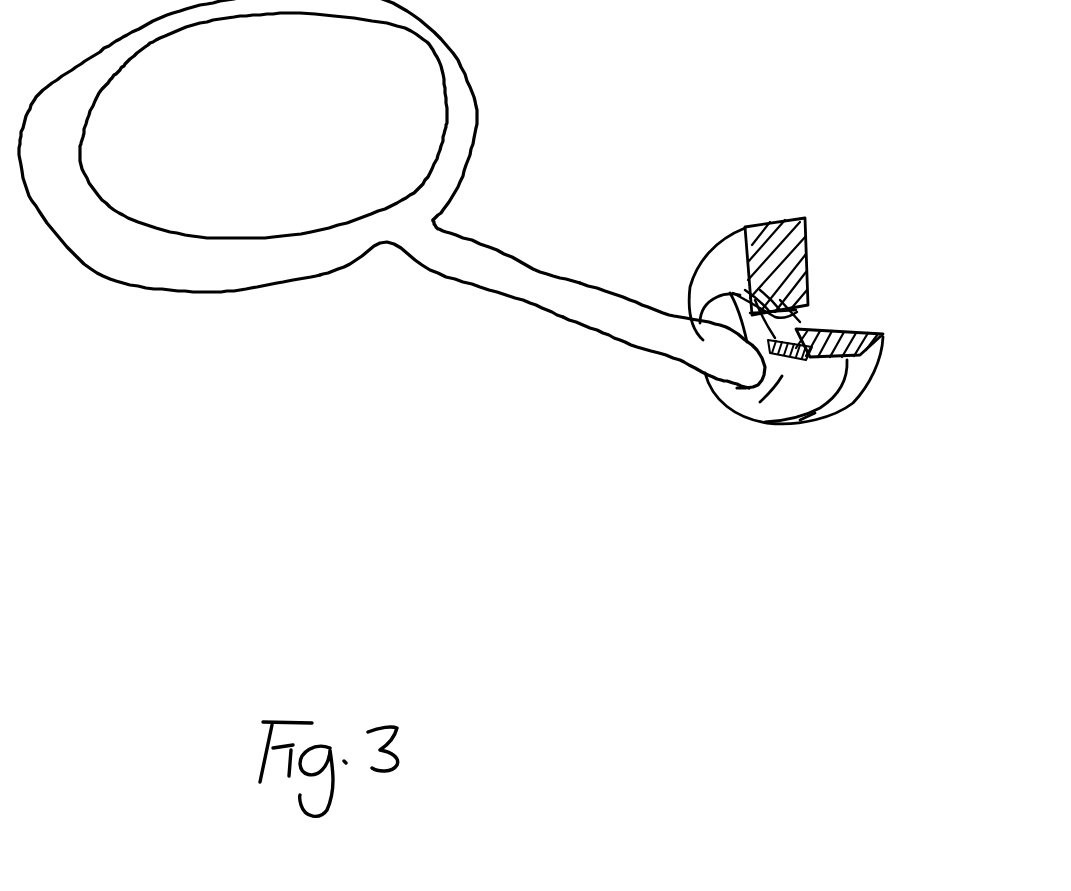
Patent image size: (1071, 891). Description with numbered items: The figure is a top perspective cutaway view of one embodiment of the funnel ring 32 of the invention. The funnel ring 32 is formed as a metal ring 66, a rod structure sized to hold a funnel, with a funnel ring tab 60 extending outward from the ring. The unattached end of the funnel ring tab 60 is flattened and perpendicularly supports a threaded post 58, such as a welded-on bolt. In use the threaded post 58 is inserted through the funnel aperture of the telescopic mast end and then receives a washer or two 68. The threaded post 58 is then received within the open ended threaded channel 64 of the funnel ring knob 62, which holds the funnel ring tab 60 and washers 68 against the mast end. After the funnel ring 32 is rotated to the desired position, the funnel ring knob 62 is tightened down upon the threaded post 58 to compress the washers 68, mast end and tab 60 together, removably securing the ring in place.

The metal ring 66 is at (270, 275).
The funnel ring 32 is at (437, 272).
The funnel ring tab 60 is at (563, 317).
The threaded post 58 is at (808, 322).
The open ended threaded channel 64 is at (810, 324).
The washers 68 is at (763, 422).
The funnel ring knob 62 is at (817, 413).